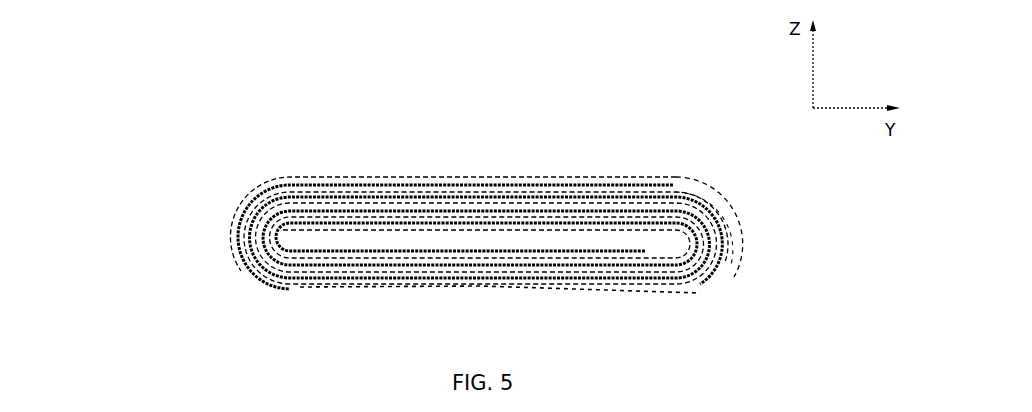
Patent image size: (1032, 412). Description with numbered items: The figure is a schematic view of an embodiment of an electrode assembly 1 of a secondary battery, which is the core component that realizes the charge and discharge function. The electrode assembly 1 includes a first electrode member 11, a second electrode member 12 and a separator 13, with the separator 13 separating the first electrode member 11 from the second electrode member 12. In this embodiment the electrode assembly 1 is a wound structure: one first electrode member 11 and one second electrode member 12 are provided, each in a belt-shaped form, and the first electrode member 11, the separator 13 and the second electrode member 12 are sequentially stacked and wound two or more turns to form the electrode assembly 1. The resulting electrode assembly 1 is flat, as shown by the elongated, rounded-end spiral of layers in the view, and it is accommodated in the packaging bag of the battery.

The electrode assembly 1 is at (143, 105).
The first electrode member 11 is at (421, 182).
The second electrode member 12 is at (481, 187).
The separator 13 is at (607, 177).